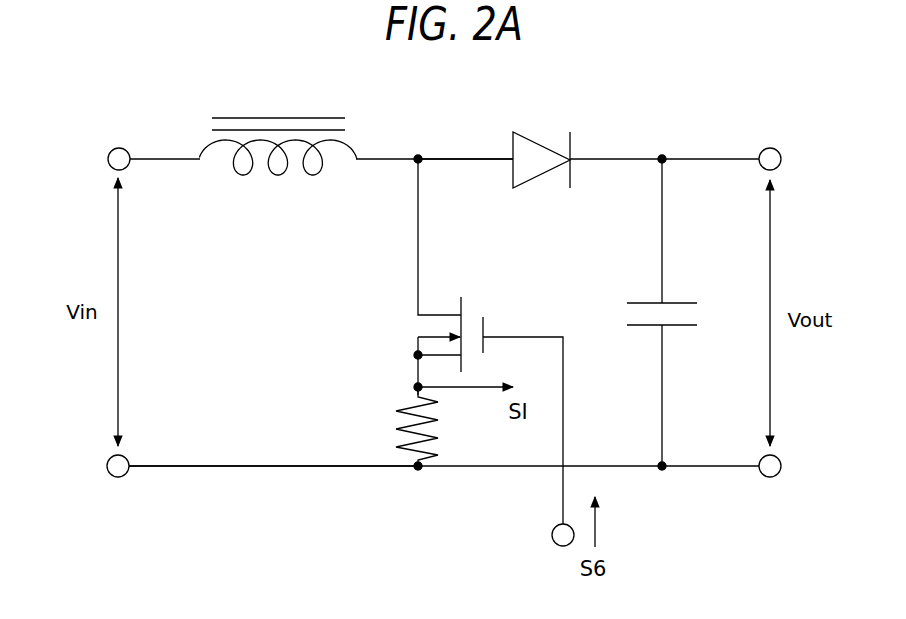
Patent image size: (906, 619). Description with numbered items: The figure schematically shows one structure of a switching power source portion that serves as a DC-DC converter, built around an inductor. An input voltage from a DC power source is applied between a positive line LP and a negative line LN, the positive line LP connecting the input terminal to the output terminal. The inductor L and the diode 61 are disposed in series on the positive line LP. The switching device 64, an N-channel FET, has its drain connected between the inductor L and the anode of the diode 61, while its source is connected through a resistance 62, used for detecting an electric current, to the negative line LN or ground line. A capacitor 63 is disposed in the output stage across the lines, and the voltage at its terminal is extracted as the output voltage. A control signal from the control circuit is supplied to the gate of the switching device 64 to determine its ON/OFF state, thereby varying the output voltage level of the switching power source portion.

The inductor L is at (355, 148).
The positive line LP is at (450, 159).
The negative line LN is at (232, 466).
The diode 61 is at (527, 136).
The resistance 62 is at (398, 428).
The capacitor 63 is at (677, 303).
The switching device 64 is at (466, 302).